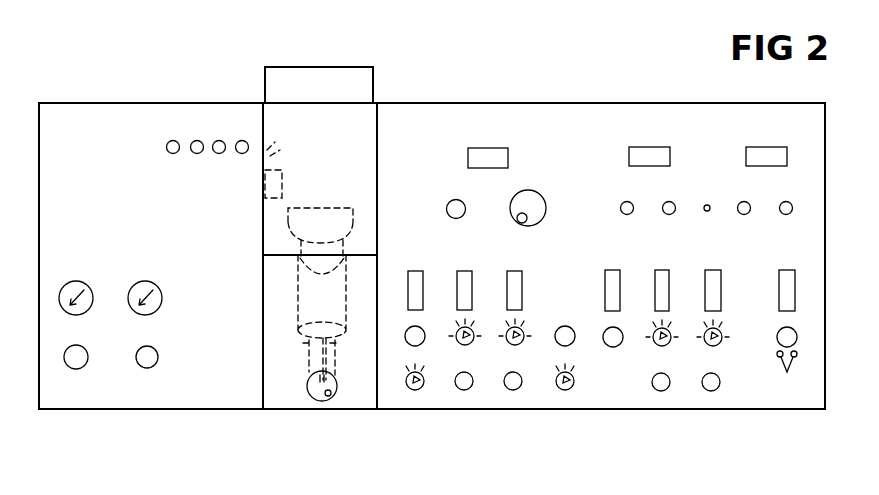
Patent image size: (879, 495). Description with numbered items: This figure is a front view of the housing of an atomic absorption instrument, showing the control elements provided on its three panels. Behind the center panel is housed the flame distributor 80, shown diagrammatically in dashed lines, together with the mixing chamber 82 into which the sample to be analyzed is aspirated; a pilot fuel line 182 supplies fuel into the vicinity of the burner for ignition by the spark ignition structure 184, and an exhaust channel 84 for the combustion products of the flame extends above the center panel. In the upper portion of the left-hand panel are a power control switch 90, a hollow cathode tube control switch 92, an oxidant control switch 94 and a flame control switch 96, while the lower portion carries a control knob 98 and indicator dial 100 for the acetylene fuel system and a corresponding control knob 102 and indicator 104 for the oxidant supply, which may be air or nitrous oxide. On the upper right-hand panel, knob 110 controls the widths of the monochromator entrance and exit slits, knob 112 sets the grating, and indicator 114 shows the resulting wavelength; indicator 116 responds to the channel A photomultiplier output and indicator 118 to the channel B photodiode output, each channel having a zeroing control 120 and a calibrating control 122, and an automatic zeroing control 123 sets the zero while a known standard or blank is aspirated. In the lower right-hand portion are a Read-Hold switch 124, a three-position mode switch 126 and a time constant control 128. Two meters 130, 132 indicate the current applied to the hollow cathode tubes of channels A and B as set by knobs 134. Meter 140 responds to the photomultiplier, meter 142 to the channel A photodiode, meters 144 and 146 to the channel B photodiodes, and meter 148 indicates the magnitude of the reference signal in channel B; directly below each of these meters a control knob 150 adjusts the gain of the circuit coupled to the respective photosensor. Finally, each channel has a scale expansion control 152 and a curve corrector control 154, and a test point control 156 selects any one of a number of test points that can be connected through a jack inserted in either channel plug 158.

The flame distributor 80 is at (337, 204).
The mixing chamber 82 is at (292, 302).
The exhaust channel 84 is at (300, 67).
The power control switch 90 is at (170, 154).
The hollow cathode tube control switch 92 is at (192, 141).
The oxidant control switch 94 is at (218, 154).
The flame control switch 96 is at (238, 141).
The control knob 98 is at (86, 364).
The indicator dial 100 is at (80, 282).
The control knob 102 is at (157, 352).
The indicator 104 is at (150, 282).
The knob 110 is at (450, 201).
The knob 112 is at (539, 192).
The indicator 114 is at (500, 148).
The indicator 116 is at (652, 147).
The indicator 118 is at (770, 147).
The zeroing control 120 is at (621, 205).
The calibrating control 122 is at (667, 202).
The automatic zeroing control 123 is at (706, 204).
The Read-Hold switch 124 is at (408, 390).
The mode switch 126 is at (567, 392).
The time constant control 128 is at (573, 343).
The meter 130 is at (422, 271).
The meter 132 is at (612, 270).
The knobs 134 is at (410, 327).
The meter 140 is at (468, 271).
The meter 142 is at (518, 271).
The meter 144 is at (660, 270).
The meter 146 is at (718, 270).
The meter 148 is at (790, 270).
The control knob 150 is at (462, 345).
The scale expansion control 152 is at (458, 390).
The curve corrector control 154 is at (510, 392).
The test point control 156 is at (780, 328).
The channel plug 158 is at (787, 375).
The pilot fuel line 182 is at (268, 149).
The spark ignition structure 184 is at (285, 167).